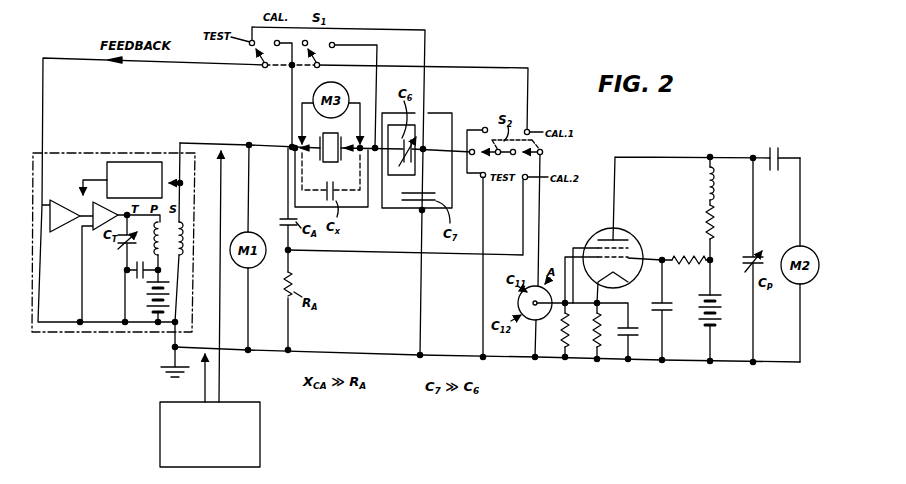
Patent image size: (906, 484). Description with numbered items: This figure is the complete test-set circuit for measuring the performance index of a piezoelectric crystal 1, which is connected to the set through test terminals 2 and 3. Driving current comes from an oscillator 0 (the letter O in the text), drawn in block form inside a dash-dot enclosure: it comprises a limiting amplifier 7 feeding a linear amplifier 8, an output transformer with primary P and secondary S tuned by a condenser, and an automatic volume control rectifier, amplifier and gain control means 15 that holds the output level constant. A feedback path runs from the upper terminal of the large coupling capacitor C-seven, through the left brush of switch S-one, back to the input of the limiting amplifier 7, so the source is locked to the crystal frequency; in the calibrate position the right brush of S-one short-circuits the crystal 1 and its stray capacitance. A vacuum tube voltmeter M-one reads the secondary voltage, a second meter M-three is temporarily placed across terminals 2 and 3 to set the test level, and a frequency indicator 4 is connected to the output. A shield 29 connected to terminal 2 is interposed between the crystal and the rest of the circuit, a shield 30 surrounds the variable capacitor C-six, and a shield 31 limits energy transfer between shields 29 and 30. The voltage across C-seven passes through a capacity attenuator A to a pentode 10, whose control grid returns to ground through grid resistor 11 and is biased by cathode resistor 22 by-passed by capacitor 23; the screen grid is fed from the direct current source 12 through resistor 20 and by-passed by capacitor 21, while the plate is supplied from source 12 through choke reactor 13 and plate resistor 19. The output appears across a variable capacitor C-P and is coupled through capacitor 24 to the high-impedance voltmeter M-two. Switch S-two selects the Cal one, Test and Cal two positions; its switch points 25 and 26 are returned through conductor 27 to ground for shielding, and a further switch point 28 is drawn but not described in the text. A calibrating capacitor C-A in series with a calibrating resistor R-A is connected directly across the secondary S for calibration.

The oscillator 0 is at (118, 154).
The piezoelectric crystal 1 is at (323, 135).
The test terminal 2 is at (305, 152).
The test terminal 3 is at (356, 152).
The frequency indicator 4 is at (254, 408).
The limiting amplifier 7 is at (57, 201).
The linear amplifier 8 is at (90, 206).
The pentode 10 is at (634, 238).
The grid resistor 11 is at (562, 334).
The direct current source 12 is at (698, 312).
The choke reactor 13 is at (705, 185).
The automatic volume control rectifier, amplifier and gain control means 15 is at (107, 168).
The plate resistor 19 is at (706, 217).
The resistor 20 is at (693, 250).
The capacitor 21 is at (664, 303).
The cathode resistor 22 is at (599, 332).
The by-pass capacitor 23 is at (632, 335).
The capacitor 24 is at (770, 148).
The switch point 25 is at (486, 128).
The switch point 26 is at (481, 178).
The conductor 27 is at (485, 216).
The switch contact 28 is at (472, 149).
The shield 29 is at (358, 208).
The shield 30 is at (419, 177).
The shield 31 is at (393, 209).